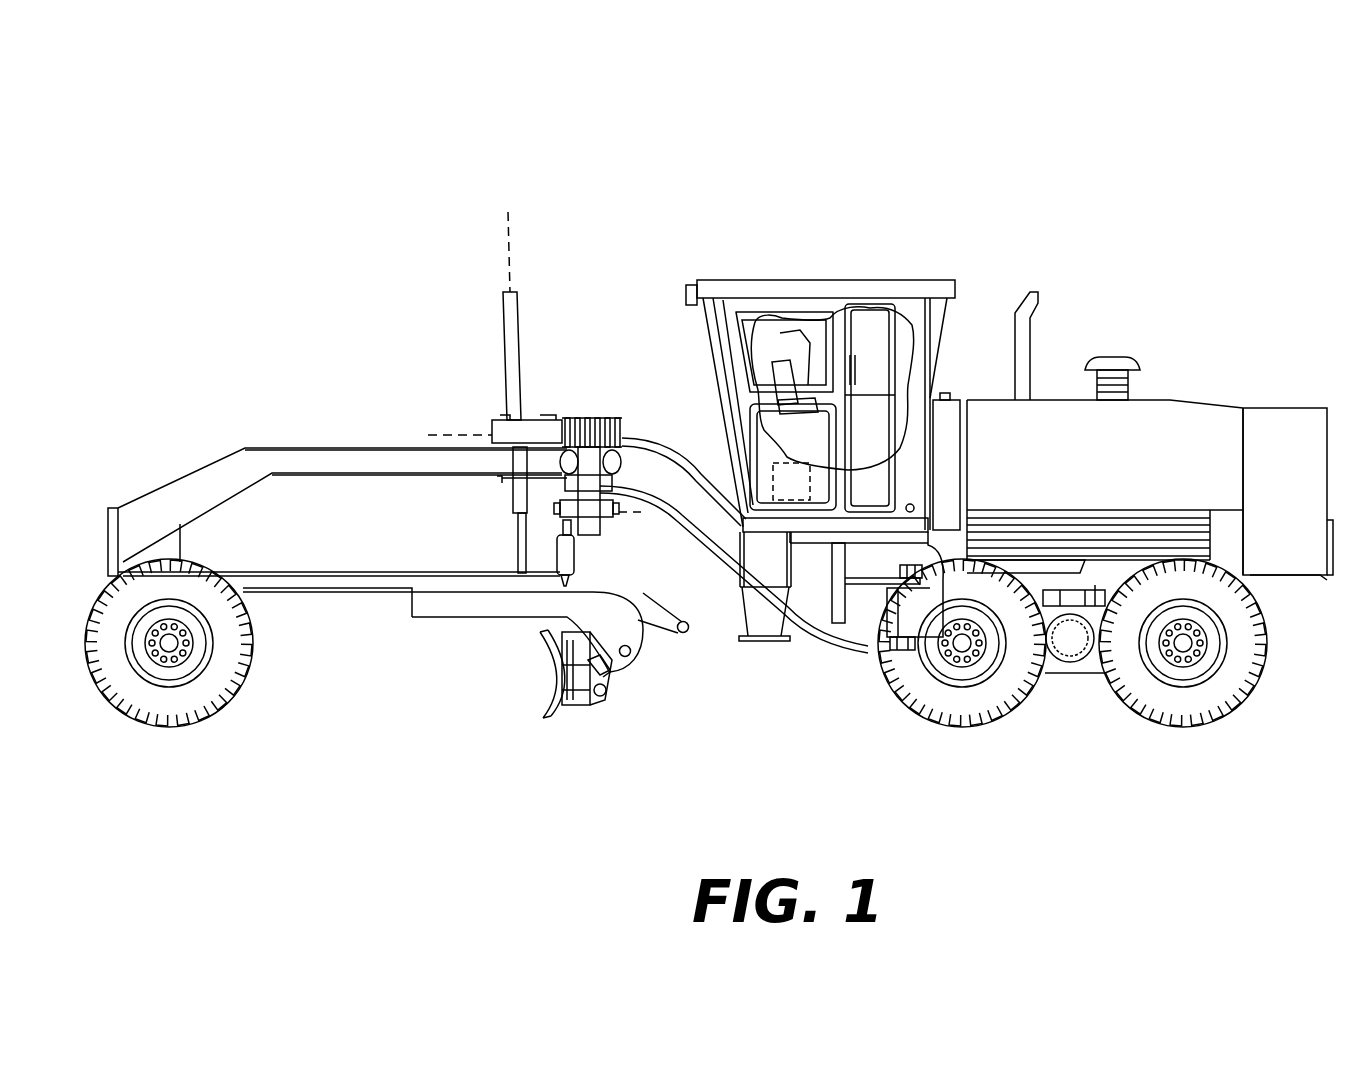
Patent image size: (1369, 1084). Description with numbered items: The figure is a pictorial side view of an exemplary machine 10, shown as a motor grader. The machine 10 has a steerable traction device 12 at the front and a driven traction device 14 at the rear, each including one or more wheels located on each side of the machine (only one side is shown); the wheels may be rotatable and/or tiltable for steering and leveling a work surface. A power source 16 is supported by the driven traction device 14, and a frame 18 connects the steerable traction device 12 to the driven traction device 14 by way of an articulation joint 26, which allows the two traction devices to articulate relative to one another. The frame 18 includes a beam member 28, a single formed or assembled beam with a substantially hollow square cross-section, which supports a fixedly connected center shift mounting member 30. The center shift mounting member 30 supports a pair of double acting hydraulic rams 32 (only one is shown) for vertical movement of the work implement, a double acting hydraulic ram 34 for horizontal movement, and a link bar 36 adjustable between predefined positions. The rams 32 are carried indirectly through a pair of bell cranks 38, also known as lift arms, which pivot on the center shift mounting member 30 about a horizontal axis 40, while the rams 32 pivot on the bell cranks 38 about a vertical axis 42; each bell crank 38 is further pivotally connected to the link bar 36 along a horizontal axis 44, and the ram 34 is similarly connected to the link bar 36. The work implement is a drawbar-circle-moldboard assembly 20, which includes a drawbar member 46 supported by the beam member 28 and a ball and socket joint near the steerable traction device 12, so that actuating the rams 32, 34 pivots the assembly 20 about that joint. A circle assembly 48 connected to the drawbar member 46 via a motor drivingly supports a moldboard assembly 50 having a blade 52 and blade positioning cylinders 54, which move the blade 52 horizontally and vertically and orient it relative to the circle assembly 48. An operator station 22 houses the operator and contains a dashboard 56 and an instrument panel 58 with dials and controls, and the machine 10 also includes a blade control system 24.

The machine 10 is at (738, 112).
The steerable traction device 12 is at (212, 712).
The driven traction device 14 is at (1127, 706).
The power source 16 is at (1115, 477).
The frame 18 is at (258, 445).
The drawbar-circle-moldboard assembly 20 is at (447, 687).
The operator station 22 is at (841, 257).
The blade control system 24 is at (807, 499).
The articulation joint 26 is at (877, 610).
The beam member 28 is at (338, 457).
The center shift mounting member 30 is at (612, 478).
The double acting hydraulic ram 32 is at (505, 343).
The double acting hydraulic ram 34 is at (575, 566).
The link bar 36 is at (600, 526).
The bell crank 38 is at (500, 429).
The horizontal axis 40 is at (444, 434).
The vertical axis 42 is at (506, 242).
The horizontal axis 44 is at (678, 488).
The drawbar member 46 is at (382, 578).
The circle assembly 48 is at (392, 613).
The moldboard assembly 50 is at (598, 720).
The blade 52 is at (548, 706).
The blade positioning cylinders 54 is at (613, 694).
The dashboard 56 is at (832, 388).
The instrument panel 58 is at (810, 449).